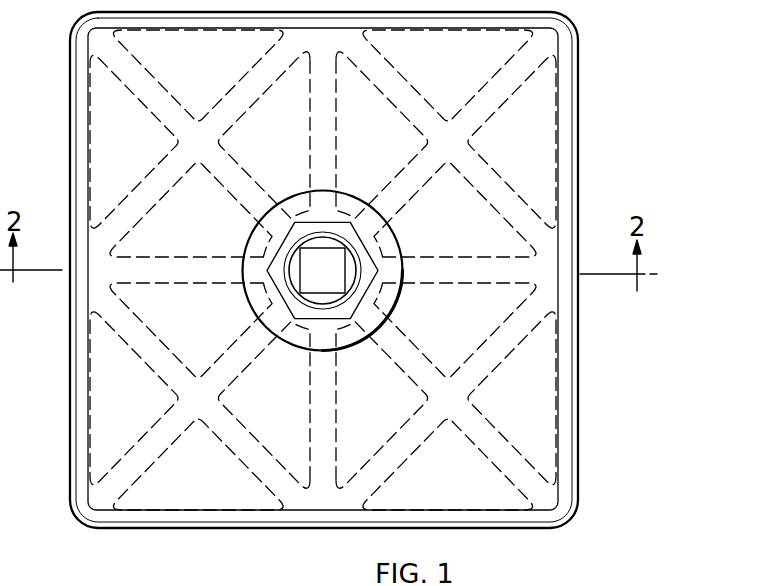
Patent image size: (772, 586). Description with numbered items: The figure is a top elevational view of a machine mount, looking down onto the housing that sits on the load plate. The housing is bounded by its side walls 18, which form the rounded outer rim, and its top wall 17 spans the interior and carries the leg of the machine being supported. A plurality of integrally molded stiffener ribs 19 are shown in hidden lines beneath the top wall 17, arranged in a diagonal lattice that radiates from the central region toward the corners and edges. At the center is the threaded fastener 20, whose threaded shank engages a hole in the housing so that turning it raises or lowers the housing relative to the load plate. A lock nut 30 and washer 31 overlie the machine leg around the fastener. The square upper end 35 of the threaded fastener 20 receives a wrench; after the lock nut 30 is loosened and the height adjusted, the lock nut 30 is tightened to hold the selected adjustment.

The top wall 17 is at (549, 387).
The side walls 18 is at (578, 448).
The stiffener ribs 19 is at (494, 168).
The threaded fastener 20 is at (320, 237).
The lock nut 30 is at (366, 278).
The washer 31 is at (374, 296).
The square upper end 35 is at (323, 286).